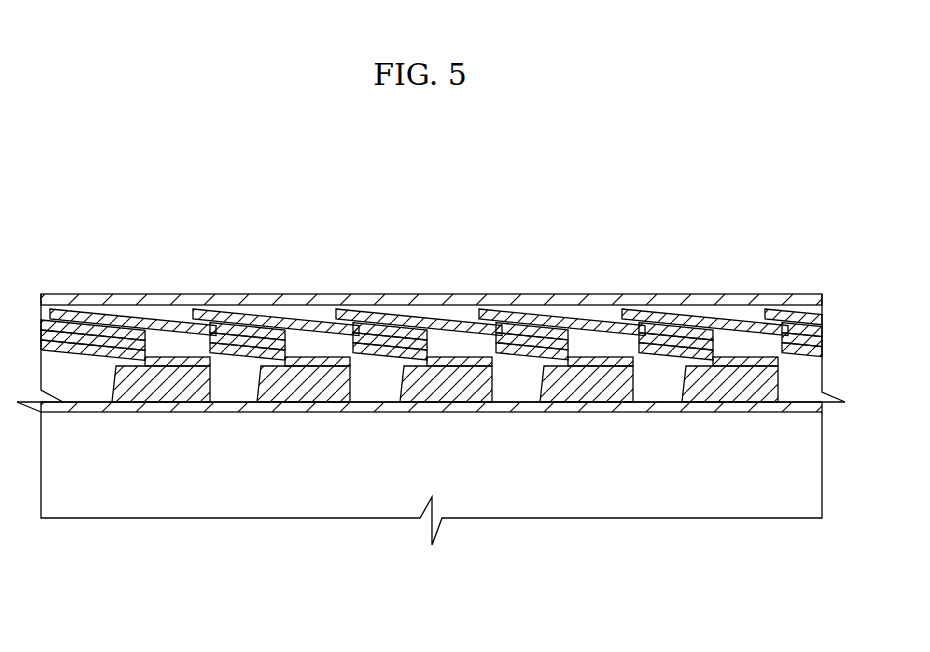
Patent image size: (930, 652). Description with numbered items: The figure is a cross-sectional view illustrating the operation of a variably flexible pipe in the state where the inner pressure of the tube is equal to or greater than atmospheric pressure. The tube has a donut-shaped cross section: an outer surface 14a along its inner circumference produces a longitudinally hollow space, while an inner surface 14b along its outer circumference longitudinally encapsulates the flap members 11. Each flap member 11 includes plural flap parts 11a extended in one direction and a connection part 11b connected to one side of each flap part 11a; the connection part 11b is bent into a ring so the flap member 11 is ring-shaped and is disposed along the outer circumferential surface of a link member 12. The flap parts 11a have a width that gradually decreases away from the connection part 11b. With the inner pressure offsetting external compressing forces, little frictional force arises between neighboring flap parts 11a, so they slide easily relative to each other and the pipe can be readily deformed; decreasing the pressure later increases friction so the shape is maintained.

The flap member 11 is at (263, 337).
The flap part 11a is at (85, 352).
The connection part 11b is at (182, 360).
The link member 12 is at (156, 388).
The outer surface 14a is at (365, 412).
The inner surface 14b is at (445, 300).